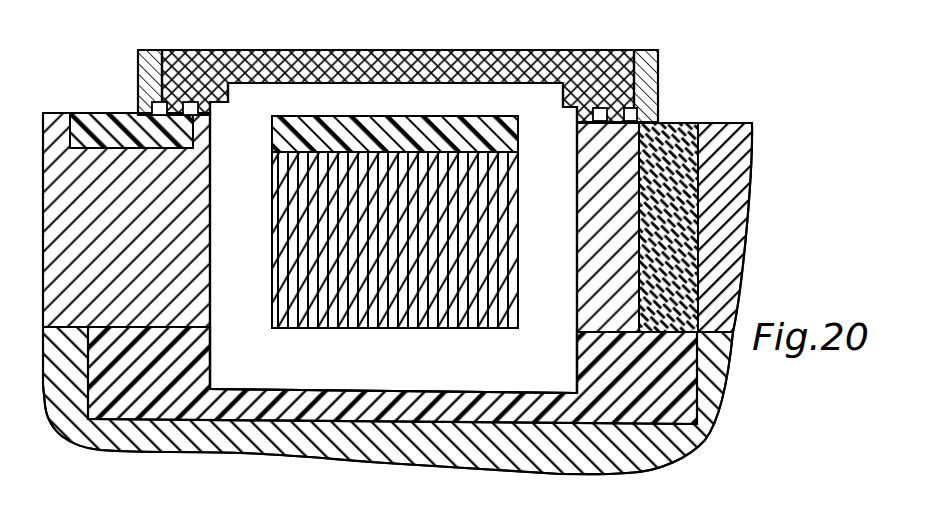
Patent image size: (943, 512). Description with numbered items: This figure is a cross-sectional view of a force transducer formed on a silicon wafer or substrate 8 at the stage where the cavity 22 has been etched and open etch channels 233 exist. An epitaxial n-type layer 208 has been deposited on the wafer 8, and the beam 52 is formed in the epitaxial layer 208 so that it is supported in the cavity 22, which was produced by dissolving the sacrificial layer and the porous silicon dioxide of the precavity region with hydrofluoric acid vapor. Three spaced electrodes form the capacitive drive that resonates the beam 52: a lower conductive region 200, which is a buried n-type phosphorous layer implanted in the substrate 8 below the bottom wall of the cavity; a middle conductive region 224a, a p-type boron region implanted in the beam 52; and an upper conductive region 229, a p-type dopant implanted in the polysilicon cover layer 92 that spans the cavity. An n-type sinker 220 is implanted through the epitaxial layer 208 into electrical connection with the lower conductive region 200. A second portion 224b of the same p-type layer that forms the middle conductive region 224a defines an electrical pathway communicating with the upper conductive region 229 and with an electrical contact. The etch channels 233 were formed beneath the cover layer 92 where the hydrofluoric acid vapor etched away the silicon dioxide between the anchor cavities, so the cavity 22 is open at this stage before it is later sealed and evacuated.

The silicon wafer or substrate 8 is at (663, 443).
The cavity 22 is at (258, 205).
The beam 52 is at (283, 256).
The cover layer 92 is at (698, 52).
The lower conductive region 200 is at (233, 393).
The epitaxial n-type layer 208 is at (718, 193).
The n-type sinker 220 is at (673, 125).
The middle conductive region 224a is at (288, 137).
The second portion of the p-type layer 224b is at (103, 112).
The upper conductive region 229 is at (540, 63).
The open etch channels 233 is at (193, 95).